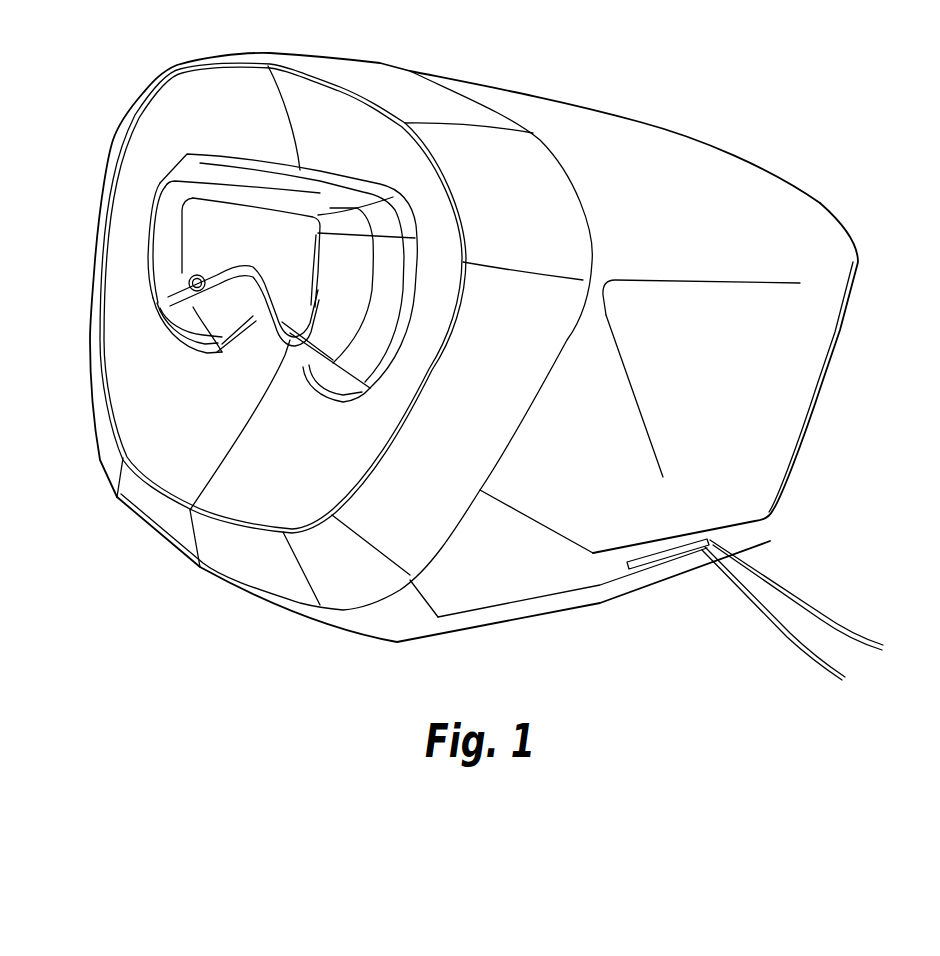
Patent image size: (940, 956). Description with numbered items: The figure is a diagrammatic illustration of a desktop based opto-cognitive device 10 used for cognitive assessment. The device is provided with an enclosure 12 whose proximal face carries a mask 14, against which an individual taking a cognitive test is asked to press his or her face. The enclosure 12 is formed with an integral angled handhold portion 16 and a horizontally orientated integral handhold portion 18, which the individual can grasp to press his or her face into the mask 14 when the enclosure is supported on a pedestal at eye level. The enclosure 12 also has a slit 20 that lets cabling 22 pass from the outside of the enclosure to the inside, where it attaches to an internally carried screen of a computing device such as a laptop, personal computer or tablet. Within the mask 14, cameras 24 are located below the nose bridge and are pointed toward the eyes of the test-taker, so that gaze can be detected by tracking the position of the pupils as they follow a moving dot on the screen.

The desktop based opto-cognitive device 10 is at (518, 58).
The enclosure 12 is at (673, 132).
The mask 14 is at (340, 183).
The integral angled handhold portion 16 is at (638, 405).
The horizontally orientated integral handhold portion 18 is at (703, 280).
The slit 20 is at (657, 568).
The cabling 22 is at (787, 585).
The cameras 24 is at (200, 277).